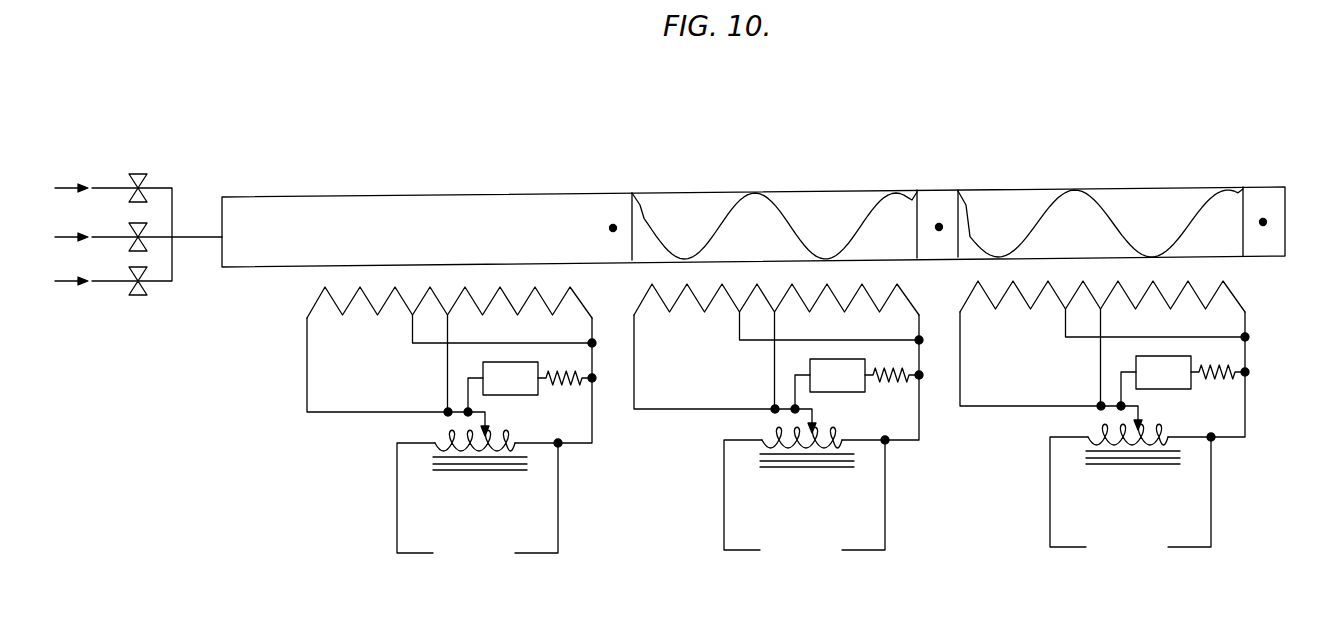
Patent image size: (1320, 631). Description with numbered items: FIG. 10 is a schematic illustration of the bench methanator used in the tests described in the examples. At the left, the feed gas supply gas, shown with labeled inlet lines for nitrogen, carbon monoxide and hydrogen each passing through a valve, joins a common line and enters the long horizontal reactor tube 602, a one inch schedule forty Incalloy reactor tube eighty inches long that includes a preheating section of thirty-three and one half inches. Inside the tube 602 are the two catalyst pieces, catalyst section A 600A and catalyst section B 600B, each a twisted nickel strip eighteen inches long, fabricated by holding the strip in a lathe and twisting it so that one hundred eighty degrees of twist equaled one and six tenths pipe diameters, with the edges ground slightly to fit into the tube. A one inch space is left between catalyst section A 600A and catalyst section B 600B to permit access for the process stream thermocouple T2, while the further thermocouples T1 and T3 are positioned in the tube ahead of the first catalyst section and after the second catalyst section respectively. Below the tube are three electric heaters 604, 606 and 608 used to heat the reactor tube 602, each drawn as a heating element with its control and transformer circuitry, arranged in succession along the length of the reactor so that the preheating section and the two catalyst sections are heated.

The reactor tube 602 is at (520, 193).
The catalyst section A 600A is at (727, 210).
The catalyst section B 600B is at (1048, 208).
The thermocouple T1 is at (613, 228).
The process stream thermocouple T2 is at (939, 227).
The thermocouple T3 is at (1263, 222).
The electric heater 604 is at (581, 303).
The electric heater 606 is at (801, 407).
The electric heater 608 is at (1131, 403).
The gas inlet valves (N2, CO, H2) gas is at (120, 235).